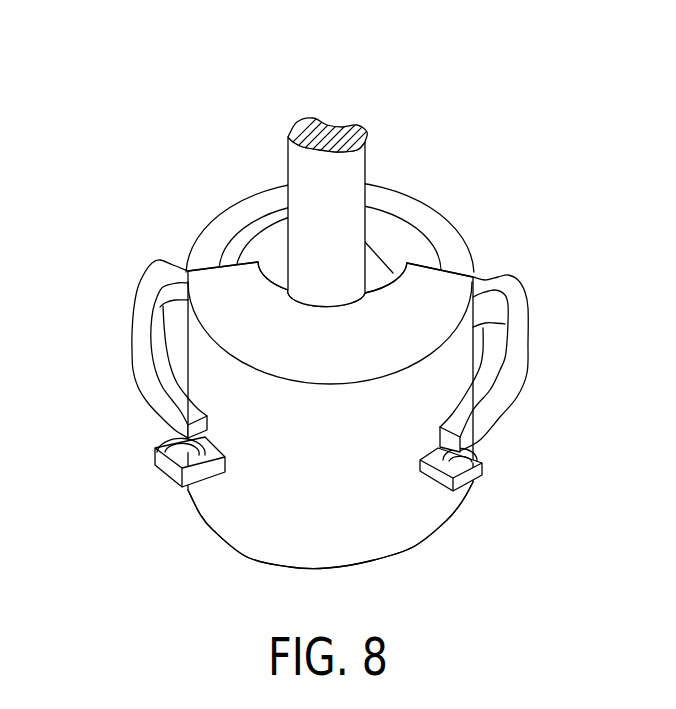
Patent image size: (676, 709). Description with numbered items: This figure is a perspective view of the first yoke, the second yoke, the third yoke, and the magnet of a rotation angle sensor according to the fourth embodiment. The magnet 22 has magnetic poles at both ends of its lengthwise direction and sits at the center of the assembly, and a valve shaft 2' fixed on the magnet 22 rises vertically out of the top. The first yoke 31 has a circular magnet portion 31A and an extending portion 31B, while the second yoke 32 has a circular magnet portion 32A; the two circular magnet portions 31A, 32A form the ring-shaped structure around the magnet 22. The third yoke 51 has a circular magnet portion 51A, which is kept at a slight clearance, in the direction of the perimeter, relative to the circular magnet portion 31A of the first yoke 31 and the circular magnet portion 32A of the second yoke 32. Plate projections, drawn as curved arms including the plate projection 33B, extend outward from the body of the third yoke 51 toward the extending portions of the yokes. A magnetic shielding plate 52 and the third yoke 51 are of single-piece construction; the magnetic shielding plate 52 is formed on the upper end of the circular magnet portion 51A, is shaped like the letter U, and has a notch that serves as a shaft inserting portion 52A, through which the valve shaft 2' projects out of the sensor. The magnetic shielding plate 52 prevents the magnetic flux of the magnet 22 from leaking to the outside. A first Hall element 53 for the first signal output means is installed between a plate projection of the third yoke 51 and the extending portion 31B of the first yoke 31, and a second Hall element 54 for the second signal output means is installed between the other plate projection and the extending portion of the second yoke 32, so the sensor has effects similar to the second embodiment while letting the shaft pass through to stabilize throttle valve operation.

The valve shaft 2' is at (339, 191).
The magnet 22 is at (250, 256).
The first yoke 31 is at (449, 242).
The circular magnet portion 31A is at (392, 202).
The extending portion 31B is at (488, 402).
The second yoke 32 is at (202, 250).
The circular magnet portion 32A is at (252, 208).
The plate projections 33B is at (143, 337).
The third yoke 51 is at (293, 540).
The circular magnet portion 51A is at (363, 547).
The magnetic shielding plate 52 is at (457, 293).
The shaft inserting portion 52A is at (286, 216).
The first Hall element 53 is at (483, 467).
The second Hall element 54 is at (163, 452).